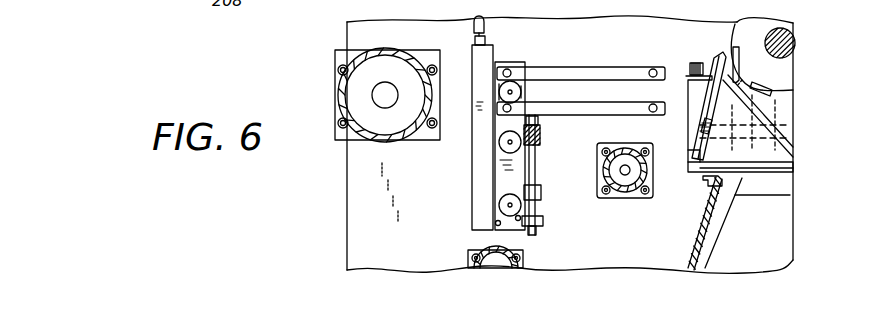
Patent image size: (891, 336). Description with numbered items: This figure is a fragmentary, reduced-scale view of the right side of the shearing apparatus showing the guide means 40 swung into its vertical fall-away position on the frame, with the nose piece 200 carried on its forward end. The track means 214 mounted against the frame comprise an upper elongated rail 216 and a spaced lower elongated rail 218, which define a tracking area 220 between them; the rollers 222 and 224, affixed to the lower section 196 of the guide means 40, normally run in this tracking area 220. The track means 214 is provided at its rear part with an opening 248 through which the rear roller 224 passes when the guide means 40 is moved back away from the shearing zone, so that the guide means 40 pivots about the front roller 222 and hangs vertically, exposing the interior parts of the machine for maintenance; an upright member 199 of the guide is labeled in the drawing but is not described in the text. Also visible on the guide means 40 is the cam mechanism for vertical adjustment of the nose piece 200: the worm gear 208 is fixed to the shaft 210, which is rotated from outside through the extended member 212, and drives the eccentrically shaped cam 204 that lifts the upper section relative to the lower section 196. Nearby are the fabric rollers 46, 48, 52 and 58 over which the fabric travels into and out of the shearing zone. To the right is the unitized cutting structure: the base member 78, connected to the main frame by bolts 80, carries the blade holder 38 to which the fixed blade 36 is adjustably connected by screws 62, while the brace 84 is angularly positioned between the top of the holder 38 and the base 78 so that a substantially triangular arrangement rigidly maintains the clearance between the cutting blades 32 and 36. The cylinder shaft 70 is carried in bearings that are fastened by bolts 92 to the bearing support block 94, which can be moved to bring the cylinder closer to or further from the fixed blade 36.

The cutting blade 32 is at (772, 91).
The fixed blade 36 is at (722, 55).
The blade holder 38 is at (755, 32).
The guide means 40 is at (480, 133).
The roller 46 is at (352, 97).
The roller 48 is at (614, 196).
The roller 52 is at (478, 267).
The roller 58 is at (690, 158).
The screws 62 is at (700, 130).
The cylinder shaft 70 is at (785, 45).
The base member 78 is at (786, 171).
The bolts 80 is at (710, 183).
The brace 84 is at (778, 136).
The bolts 92 is at (690, 68).
The bearing support block 94 is at (780, 110).
The lower section 196 is at (512, 177).
The column 199 is at (484, 70).
The nose piece 200 is at (473, 27).
The eccentrically shaped cam 204 is at (537, 162).
The worm gear 208 is at (540, 144).
The shaft 210 is at (534, 172).
The extended member 212 is at (540, 228).
The track means 214 is at (633, 60).
The upper elongated rail 216 is at (583, 70).
The lower elongated rail 218 is at (618, 112).
The tracking area 220 is at (548, 95).
The roller 222 is at (509, 81).
The roller 224 is at (509, 208).
The opening 248 is at (493, 98).